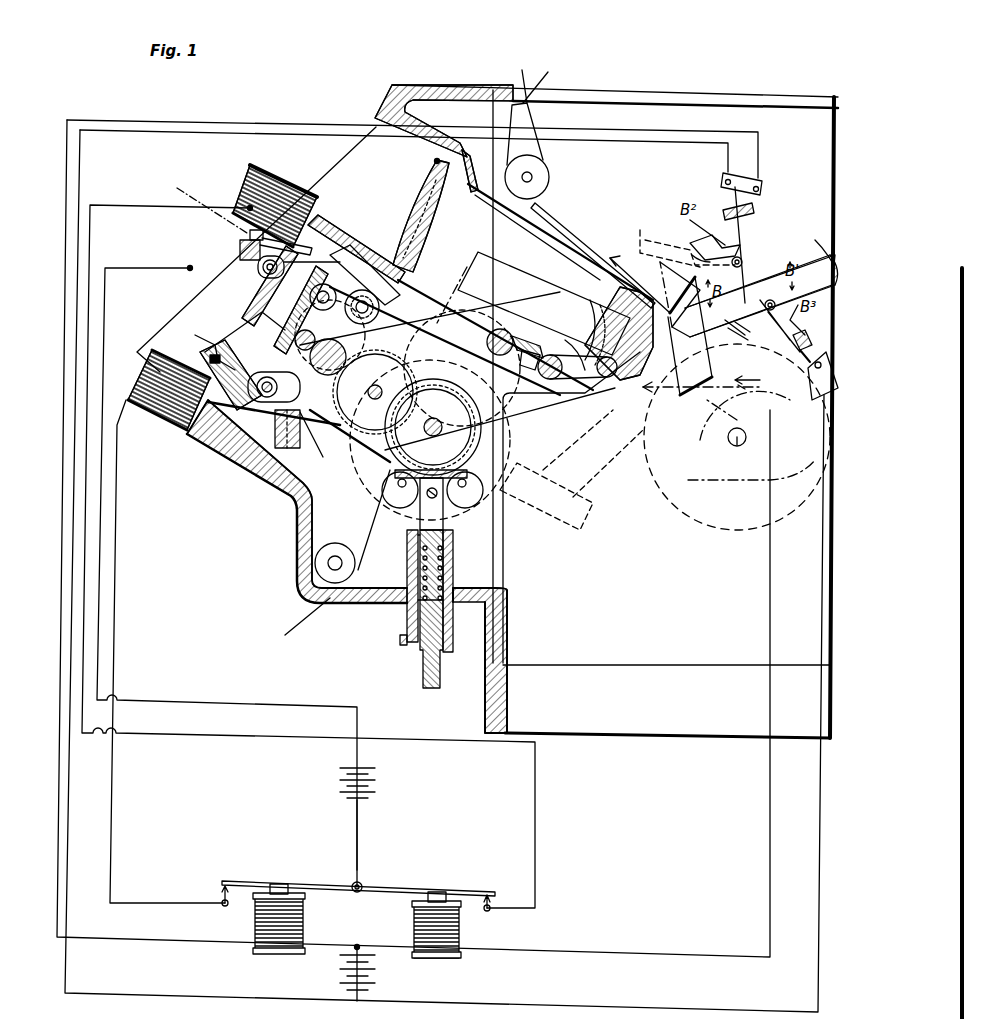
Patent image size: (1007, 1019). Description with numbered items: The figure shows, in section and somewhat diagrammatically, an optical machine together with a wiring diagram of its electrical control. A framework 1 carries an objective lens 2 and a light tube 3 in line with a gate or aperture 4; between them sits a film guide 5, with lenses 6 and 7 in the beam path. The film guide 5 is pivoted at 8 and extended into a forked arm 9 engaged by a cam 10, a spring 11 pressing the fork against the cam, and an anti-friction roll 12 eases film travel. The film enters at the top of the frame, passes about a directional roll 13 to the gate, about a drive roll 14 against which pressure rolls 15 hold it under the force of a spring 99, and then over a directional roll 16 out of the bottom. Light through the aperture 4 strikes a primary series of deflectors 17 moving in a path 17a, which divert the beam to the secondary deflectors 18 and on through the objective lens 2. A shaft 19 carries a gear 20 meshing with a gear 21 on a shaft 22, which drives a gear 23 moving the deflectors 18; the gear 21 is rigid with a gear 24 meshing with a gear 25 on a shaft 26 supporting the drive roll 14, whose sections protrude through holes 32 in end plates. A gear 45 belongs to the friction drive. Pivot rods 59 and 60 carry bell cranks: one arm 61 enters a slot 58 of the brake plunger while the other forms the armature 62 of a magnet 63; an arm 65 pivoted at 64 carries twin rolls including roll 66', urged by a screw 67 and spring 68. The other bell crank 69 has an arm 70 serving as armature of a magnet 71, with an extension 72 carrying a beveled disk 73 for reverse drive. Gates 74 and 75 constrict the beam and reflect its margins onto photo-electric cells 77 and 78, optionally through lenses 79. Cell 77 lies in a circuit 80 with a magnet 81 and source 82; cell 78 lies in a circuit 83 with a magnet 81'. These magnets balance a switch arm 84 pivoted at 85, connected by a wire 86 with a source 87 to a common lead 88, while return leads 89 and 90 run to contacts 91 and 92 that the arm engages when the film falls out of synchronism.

The framework 1 is at (441, 85).
The objective lens 2 is at (495, 301).
The light tube 3 is at (622, 268).
The gate or aperture 4 is at (645, 347).
The film guide 5 is at (618, 285).
The lens 6 is at (420, 190).
The lens 7 is at (598, 280).
The pivot 8 is at (661, 377).
The forked or bifurcated arm 9 is at (505, 320).
The cam 10 is at (495, 330).
The spring 11 is at (548, 340).
The anti-friction roll 12 is at (610, 378).
The directional roll 13 is at (550, 180).
The drive roll 14 is at (363, 478).
The pressure rolls 15 is at (398, 506).
The directional roll 16 is at (315, 562).
The deflectors 17 is at (672, 400).
The path 17a is at (745, 399).
The deflectors 18 is at (690, 270).
The shaft 19 is at (730, 443).
The gear 20 is at (690, 485).
The gear 21 is at (630, 420).
The shaft 22 is at (632, 250).
The gear 23 is at (653, 233).
The gear 24 is at (582, 525).
The gear 25 is at (345, 475).
The shaft 26 is at (445, 395).
The holes 32 is at (356, 367).
The gear 45 is at (412, 350).
The slot 58 is at (354, 321).
The pivot rod 59 is at (360, 290).
The pivot rod 60 is at (256, 410).
The arm 61 is at (255, 300).
The armature 62 is at (240, 243).
The magnet 63 is at (283, 178).
The pivot 64 is at (258, 275).
The arm 65 is at (328, 284).
The twin roll 66' is at (449, 280).
The screw 67 is at (380, 228).
The spring 68 is at (372, 250).
The bell crank 69 is at (256, 332).
The arm of the bell crank 70 is at (200, 340).
The magnet 71 is at (153, 422).
The extension 72 is at (278, 425).
The beveled disk 73 is at (304, 436).
The gate 74 is at (718, 248).
The gate 75 is at (757, 312).
The photo-electric cell 77 is at (752, 180).
The photo-electric cell 78 is at (815, 398).
The lens 79 is at (760, 215).
The circuit 80 is at (655, 120).
The magnet 81 is at (262, 919).
The magnet 81' is at (458, 925).
The source of power 82 is at (375, 972).
The circuit 83 is at (818, 797).
The switch arm 84 is at (372, 884).
The pivot 85 is at (352, 884).
The wire 86 is at (360, 820).
The source of power 87 is at (340, 785).
The common lead 88 is at (193, 255).
The return lead 89 is at (140, 215).
The return lead 90 is at (117, 492).
The contact 91 is at (492, 897).
The contact 92 is at (220, 890).
The spring 99 is at (453, 575).